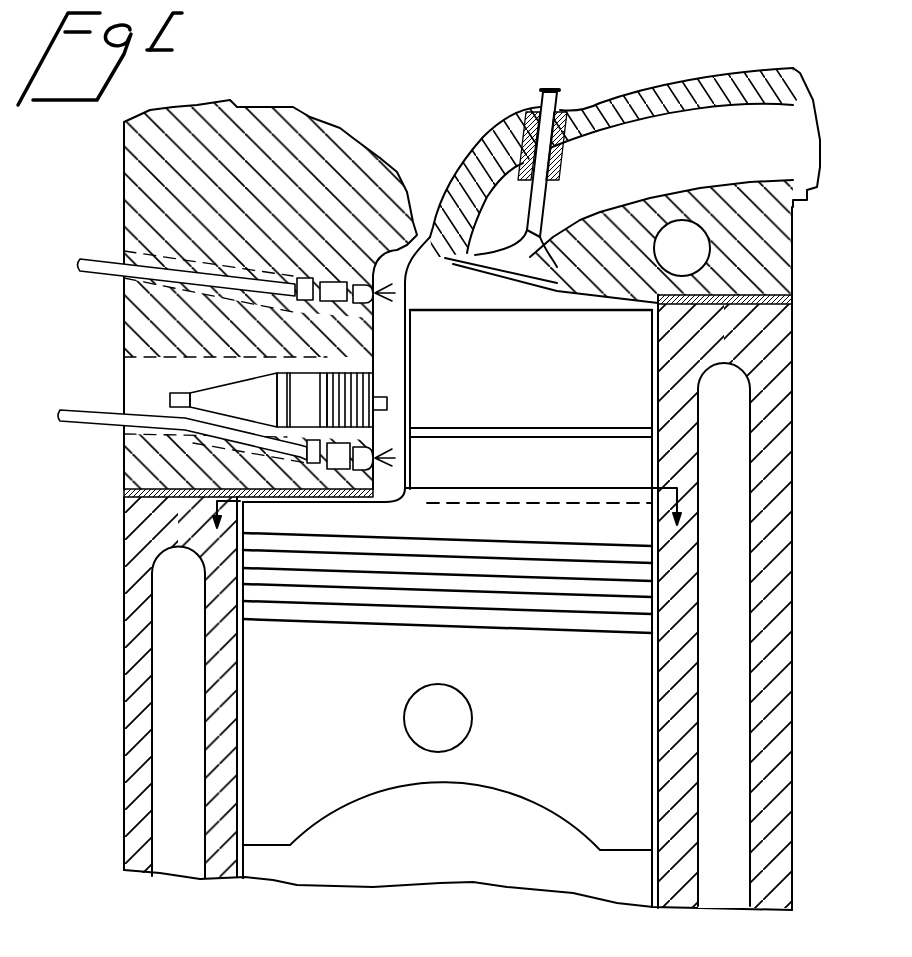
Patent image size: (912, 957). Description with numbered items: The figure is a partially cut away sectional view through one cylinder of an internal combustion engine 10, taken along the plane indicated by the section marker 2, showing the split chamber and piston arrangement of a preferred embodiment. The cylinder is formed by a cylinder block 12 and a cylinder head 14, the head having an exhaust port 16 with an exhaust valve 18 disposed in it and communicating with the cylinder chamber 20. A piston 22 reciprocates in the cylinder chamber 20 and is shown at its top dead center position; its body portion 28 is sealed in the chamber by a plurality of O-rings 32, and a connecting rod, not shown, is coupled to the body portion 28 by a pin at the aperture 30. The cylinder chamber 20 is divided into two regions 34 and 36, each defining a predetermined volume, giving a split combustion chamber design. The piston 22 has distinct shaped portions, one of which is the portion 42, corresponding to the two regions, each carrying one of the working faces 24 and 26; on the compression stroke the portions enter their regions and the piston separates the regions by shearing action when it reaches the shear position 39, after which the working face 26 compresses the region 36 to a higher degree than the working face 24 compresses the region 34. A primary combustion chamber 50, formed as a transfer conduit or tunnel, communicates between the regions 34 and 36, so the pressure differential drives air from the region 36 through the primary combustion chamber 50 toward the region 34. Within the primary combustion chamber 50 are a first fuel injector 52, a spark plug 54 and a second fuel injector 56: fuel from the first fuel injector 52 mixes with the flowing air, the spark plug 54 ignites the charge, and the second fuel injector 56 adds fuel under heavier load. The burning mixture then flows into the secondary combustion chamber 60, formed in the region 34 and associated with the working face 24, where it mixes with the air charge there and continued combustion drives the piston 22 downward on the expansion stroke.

The internal combustion engine 10 is at (97, 222).
The cylinder block 12 is at (124, 603).
The cylinder head 14 is at (124, 315).
The exhaust port 16 is at (670, 143).
The exhaust valve 18 is at (535, 246).
The cylinder chamber 20 is at (414, 851).
The piston 22 is at (528, 737).
The working face 24 is at (507, 316).
The working face 26 is at (330, 508).
The body portion 28 is at (298, 792).
The aperture 30 is at (402, 706).
The O-rings 32 is at (552, 588).
The region of the cylinder chamber 34 is at (658, 352).
The region of the cylinder chamber 36 is at (217, 501).
The shear position 39 is at (410, 496).
The piston portion 42 is at (450, 539).
The primary combustion chamber 50 is at (390, 367).
The first fuel injector 52 is at (88, 425).
The spark plug 54 is at (213, 390).
The second fuel injector 56 is at (88, 260).
The secondary combustion chamber 60 is at (440, 288).
The section line 2- 2 is at (445, 531).